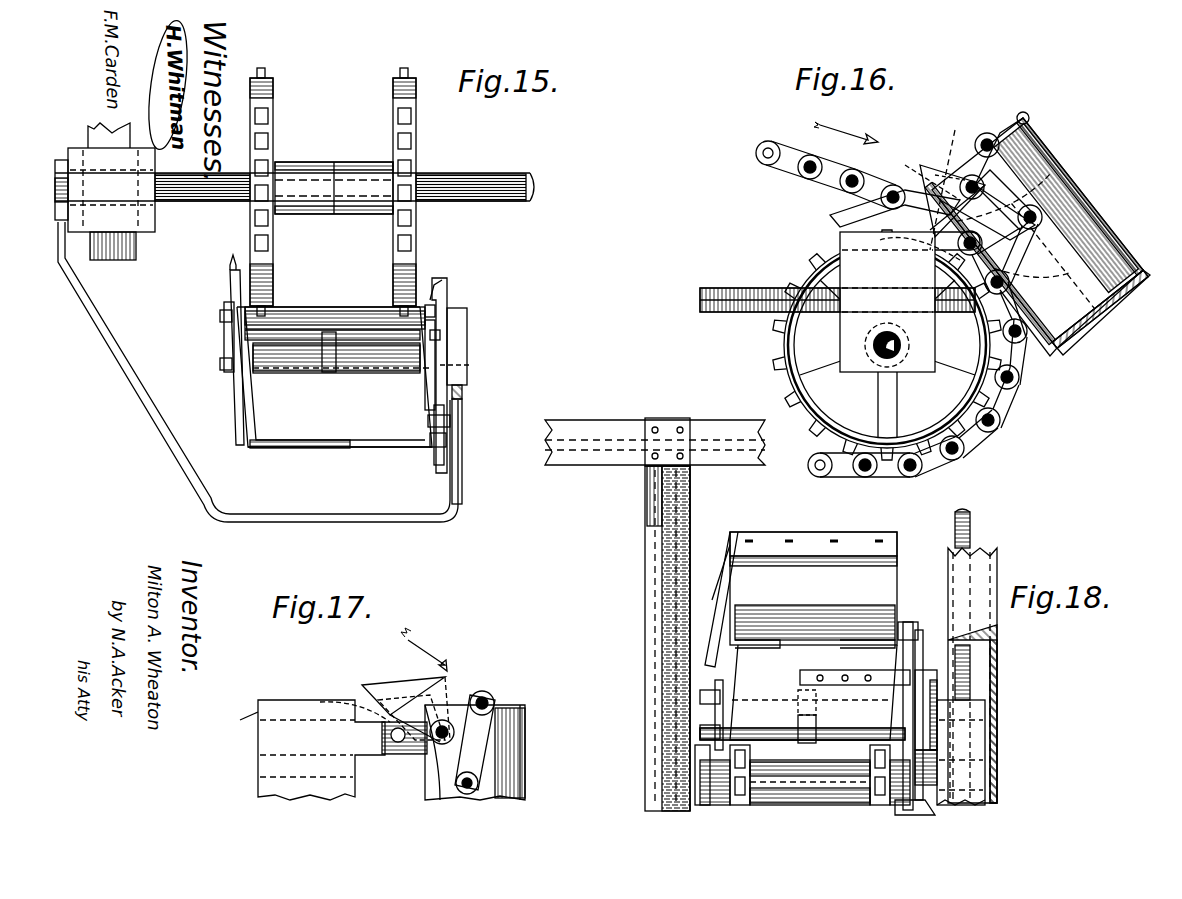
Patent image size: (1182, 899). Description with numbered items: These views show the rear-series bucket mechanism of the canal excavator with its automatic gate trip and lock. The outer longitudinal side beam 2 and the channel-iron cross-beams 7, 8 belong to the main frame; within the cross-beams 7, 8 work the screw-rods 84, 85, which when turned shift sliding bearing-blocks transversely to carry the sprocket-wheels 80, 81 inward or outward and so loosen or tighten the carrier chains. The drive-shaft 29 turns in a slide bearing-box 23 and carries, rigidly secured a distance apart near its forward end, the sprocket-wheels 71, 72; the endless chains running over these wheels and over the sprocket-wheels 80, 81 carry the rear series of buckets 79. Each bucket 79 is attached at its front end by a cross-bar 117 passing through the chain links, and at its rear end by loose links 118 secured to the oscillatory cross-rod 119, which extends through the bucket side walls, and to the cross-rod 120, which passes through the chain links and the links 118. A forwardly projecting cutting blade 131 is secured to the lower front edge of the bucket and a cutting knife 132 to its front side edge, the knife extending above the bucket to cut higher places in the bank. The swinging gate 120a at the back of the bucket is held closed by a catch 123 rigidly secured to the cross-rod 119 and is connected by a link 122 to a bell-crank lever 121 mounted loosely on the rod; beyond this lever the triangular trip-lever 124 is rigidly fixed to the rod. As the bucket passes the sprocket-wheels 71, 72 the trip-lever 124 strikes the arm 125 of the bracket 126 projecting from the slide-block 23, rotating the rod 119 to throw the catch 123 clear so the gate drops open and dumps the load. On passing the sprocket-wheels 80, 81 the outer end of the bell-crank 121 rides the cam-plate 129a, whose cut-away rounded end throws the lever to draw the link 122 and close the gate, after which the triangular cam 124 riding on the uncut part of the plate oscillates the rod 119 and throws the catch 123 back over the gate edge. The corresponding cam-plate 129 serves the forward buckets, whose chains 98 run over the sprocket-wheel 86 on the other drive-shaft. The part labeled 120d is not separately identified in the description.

In FIG. 18, the outer longitudinal side beam 2 is at (596, 420).
In FIG. 18, the channel-iron cross-beam 7 is at (646, 570).
In FIG. 18, the channel-iron cross-beam 8 is at (990, 560).
In FIG. 15, the slide bearing-box 23 is at (105, 191).
In FIG. 15, the drive-shaft 29 is at (500, 208).
In FIG. 15, the sprocket-wheel 71 is at (277, 192).
In FIG. 15, the sprocket-wheel 72 is at (420, 192).
In FIG. 15, the rear bucket 79 is at (321, 383).
In FIG. 16, the rear bucket 79 is at (1036, 232).
In FIG. 18, the rear bucket 79 is at (813, 590).
In FIG. 17, the rear bucket 79 is at (522, 760).
In FIG. 18, the sprocket-wheel 80 is at (750, 752).
In FIG. 18, the sprocket-wheel 81 is at (868, 745).
In FIG. 18, the screw-rod 84 is at (672, 660).
In FIG. 18, the screw-rod 85 is at (970, 515).
In FIG. 16, the sprocket-wheel 86 is at (790, 370).
In FIG. 16, the sprocket-chain 98 is at (985, 437).
In FIG. 15, the cross-bar 117 is at (335, 307).
In FIG. 15, the loose link 118 is at (228, 343).
In FIG. 18, the loose link 118 is at (714, 728).
In FIG. 15, the oscillatory cross-rod 119 is at (226, 372).
In FIG. 16, the oscillatory cross-rod 119 is at (1000, 140).
In FIG. 18, the oscillatory cross-rod 119 is at (715, 700).
In FIG. 18, the cross-rod 120 is at (700, 750).
In FIG. 15, the hinged gate 120a is at (342, 377).
In FIG. 18, the hinged gate 120a is at (820, 692).
In FIG. 17, the bracket 120d is at (515, 708).
In FIG. 15, the bell-crank lever 121 is at (447, 300).
In FIG. 16, the bell-crank lever 121 is at (885, 213).
In FIG. 18, the bell-crank lever 121 is at (917, 635).
In FIG. 17, the bell-crank lever 121 is at (403, 703).
In FIG. 15, the link 122 is at (444, 436).
In FIG. 16, the link 122 is at (1010, 175).
In FIG. 18, the link 122 is at (905, 630).
In FIG. 17, the link 122 is at (485, 730).
In FIG. 16, the catch 123 is at (955, 181).
In FIG. 18, the catch 123 is at (802, 740).
In FIG. 17, the catch 123 is at (478, 704).
In FIG. 15, the triangular trip-lever 124 is at (468, 330).
In FIG. 16, the triangular trip-lever 124 is at (930, 170).
In FIG. 18, the triangular trip-lever 124 is at (930, 678).
In FIG. 17, the triangular trip-lever 124 is at (445, 677).
In FIG. 15, the arm 125 is at (460, 425).
In FIG. 15, the bracket 126 is at (108, 325).
In FIG. 16, the cam-plate 129 is at (887, 302).
In FIG. 18, the cam-plate 129 is at (940, 760).
In FIG. 17, the cam-plate 129 is at (312, 750).
In FIG. 16, the cam-plate 129a is at (927, 245).
In FIG. 18, the cam-plate 129a is at (920, 768).
In FIG. 17, the cam-plate 129a is at (345, 703).
In FIG. 15, the cutting blade 131 is at (300, 450).
In FIG. 16, the cutting blade 131 is at (1158, 262).
In FIG. 18, the cutting blade 131 is at (780, 540).
In FIG. 15, the cutting knife 132 is at (230, 276).
In FIG. 16, the cutting knife 132 is at (1040, 356).
In FIG. 18, the cutting knife 132 is at (716, 578).